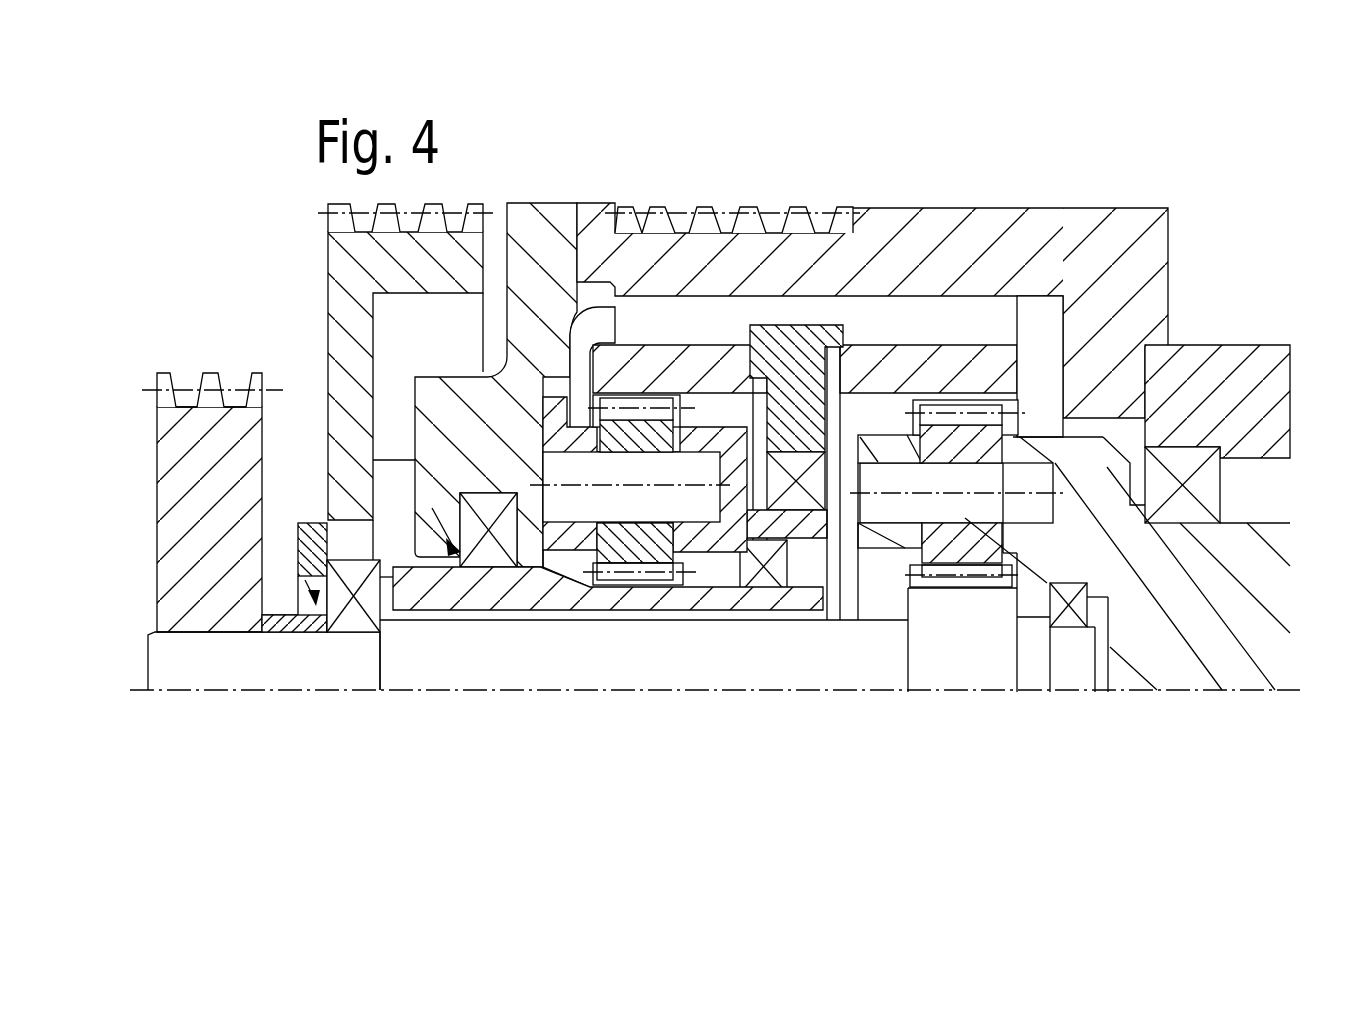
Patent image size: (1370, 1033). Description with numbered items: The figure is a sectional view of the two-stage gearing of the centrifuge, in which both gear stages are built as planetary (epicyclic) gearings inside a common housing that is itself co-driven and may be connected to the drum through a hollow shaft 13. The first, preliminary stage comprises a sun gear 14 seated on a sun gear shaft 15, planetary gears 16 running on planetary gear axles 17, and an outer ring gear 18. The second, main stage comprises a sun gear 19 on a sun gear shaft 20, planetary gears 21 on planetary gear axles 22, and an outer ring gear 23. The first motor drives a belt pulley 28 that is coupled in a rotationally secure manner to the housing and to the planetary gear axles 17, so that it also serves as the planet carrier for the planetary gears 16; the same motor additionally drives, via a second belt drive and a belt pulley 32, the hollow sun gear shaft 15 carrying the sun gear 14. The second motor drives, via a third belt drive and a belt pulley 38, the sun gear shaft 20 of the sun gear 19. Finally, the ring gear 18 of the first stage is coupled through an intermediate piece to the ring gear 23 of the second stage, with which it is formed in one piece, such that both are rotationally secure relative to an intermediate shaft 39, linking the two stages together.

The hollow shaft 13 is at (1018, 240).
The sun gear 14 is at (588, 578).
The sun gear shaft 15 is at (630, 598).
The planetary gears 16 is at (623, 437).
The planetary gear axles 17 is at (696, 495).
The outer ring gear 18 is at (691, 346).
The sun gear 19 is at (945, 587).
The sun gear shaft 20 is at (752, 660).
The planetary gears 21 is at (985, 528).
The planetary gear axles 22 is at (1027, 482).
The outer ring gear 23 is at (1004, 372).
The belt pulley 28 is at (808, 207).
The belt pulley 32 is at (470, 210).
The belt pulley 38 is at (213, 450).
The intermediate shaft 39 is at (831, 318).